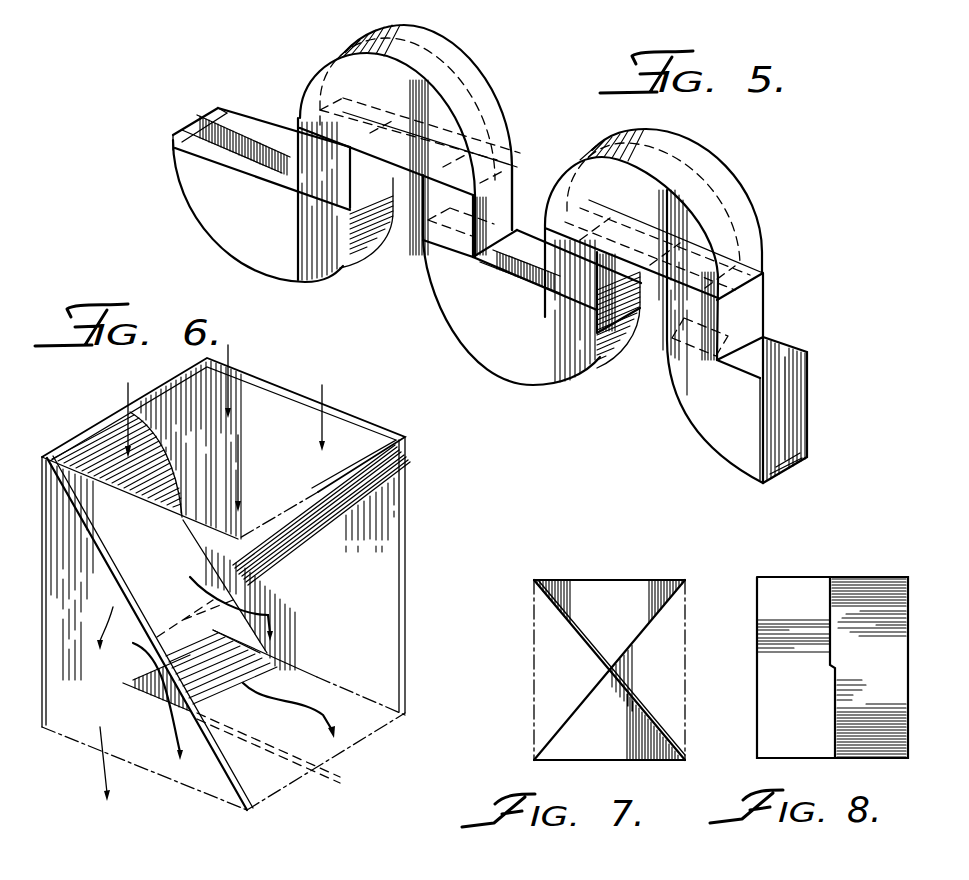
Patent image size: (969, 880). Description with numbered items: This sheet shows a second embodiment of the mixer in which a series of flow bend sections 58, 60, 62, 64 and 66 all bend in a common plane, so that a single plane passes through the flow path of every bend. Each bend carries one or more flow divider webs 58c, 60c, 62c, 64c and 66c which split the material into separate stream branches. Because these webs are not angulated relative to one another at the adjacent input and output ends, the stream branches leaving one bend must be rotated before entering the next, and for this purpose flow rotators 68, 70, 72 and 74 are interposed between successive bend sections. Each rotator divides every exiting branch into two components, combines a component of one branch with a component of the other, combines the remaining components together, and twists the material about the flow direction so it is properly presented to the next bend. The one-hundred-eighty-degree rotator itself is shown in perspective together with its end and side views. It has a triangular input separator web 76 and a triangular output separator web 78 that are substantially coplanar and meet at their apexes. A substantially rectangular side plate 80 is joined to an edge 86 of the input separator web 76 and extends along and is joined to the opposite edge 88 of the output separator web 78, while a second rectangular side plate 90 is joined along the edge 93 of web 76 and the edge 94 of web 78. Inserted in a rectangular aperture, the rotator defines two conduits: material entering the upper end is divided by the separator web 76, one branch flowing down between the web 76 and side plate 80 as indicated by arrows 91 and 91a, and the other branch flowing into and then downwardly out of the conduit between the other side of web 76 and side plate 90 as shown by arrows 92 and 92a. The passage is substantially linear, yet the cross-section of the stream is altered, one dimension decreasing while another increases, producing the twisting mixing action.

In FIG. 5, the flow bend section 58 is at (201, 211).
In FIG. 5, the flow divider web 58c is at (186, 130).
In FIG. 5, the flow bend section 60 is at (492, 86).
In FIG. 5, the flow divider web 60c is at (452, 58).
In FIG. 5, the flow bend section 62 is at (471, 342).
In FIG. 5, the flow divider web 62c is at (510, 268).
In FIG. 5, the flow bend section 64 is at (746, 206).
In FIG. 5, the flow divider web 64c is at (716, 172).
In FIG. 5, the flow bend section 66 is at (701, 428).
In FIG. 5, the flow divider web 66c is at (791, 416).
In FIG. 5, the flow rotator 68 is at (298, 126).
In FIG. 5, the flow rotator 70 is at (416, 224).
In FIG. 5, the flow rotator 72 is at (540, 284).
In FIG. 5, the flow rotator 74 is at (758, 306).
In FIG. 6, the input separator web 76 is at (160, 414).
In FIG. 7, the input separator web 76 is at (604, 586).
In FIG. 6, the output separator web 78 is at (150, 692).
In FIG. 7, the output separator web 78 is at (637, 760).
In FIG. 6, the side plate 80 is at (352, 490).
In FIG. 7, the side plate 80 is at (632, 650).
In FIG. 8, the side plate 80 is at (900, 661).
In FIG. 6, the edge of separator web 86 is at (273, 566).
In FIG. 8, the edge of separator web 86 is at (830, 601).
In FIG. 6, the edge of output separator web 88 is at (206, 603).
In FIG. 7, the edge of output separator web 88 is at (588, 693).
In FIG. 6, the second side plate 90 is at (91, 457).
In FIG. 7, the second side plate 90 is at (641, 680).
In FIG. 8, the second side plate 90 is at (767, 670).
In FIG. 6, the arrow 91 is at (230, 350).
In FIG. 6, the arrow 91a is at (183, 736).
In FIG. 6, the arrow 92 is at (128, 395).
In FIG. 6, the arrow 92a is at (280, 603).
In FIG. 6, the edge of separator web 93 is at (177, 482).
In FIG. 6, the edge of output separator web 94 is at (298, 662).
In FIG. 8, the edge of output separator web 94 is at (838, 745).